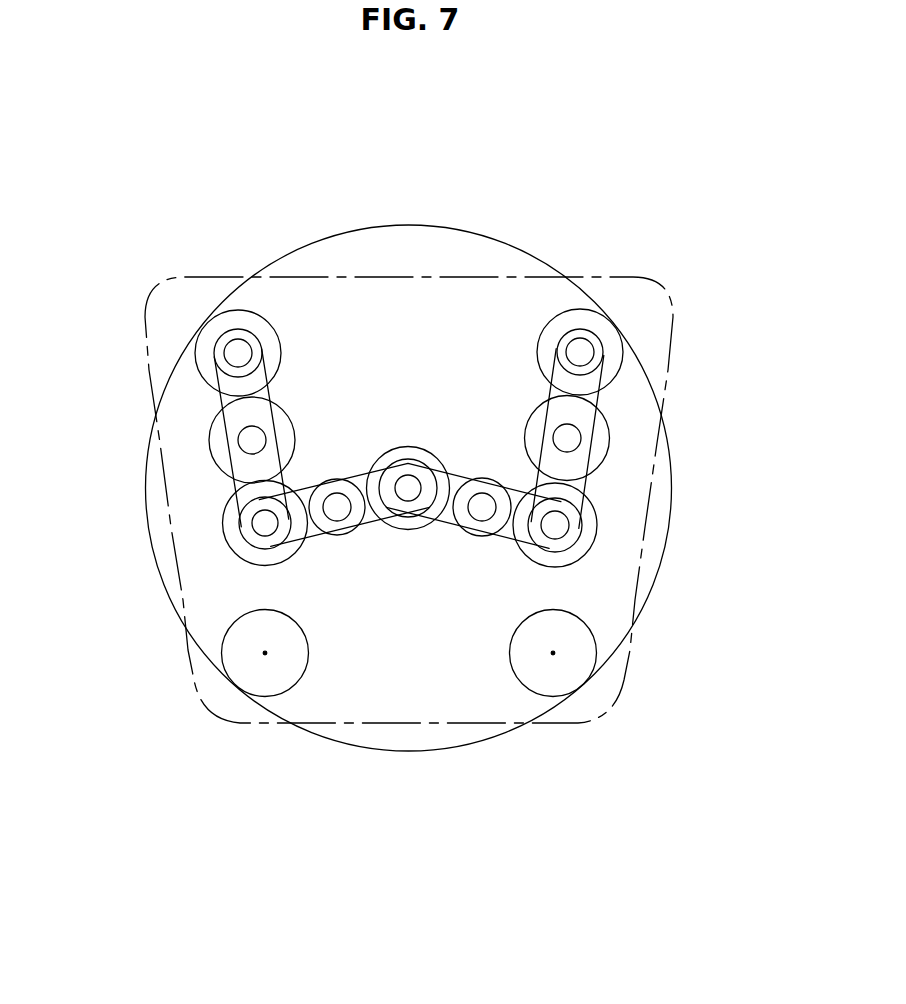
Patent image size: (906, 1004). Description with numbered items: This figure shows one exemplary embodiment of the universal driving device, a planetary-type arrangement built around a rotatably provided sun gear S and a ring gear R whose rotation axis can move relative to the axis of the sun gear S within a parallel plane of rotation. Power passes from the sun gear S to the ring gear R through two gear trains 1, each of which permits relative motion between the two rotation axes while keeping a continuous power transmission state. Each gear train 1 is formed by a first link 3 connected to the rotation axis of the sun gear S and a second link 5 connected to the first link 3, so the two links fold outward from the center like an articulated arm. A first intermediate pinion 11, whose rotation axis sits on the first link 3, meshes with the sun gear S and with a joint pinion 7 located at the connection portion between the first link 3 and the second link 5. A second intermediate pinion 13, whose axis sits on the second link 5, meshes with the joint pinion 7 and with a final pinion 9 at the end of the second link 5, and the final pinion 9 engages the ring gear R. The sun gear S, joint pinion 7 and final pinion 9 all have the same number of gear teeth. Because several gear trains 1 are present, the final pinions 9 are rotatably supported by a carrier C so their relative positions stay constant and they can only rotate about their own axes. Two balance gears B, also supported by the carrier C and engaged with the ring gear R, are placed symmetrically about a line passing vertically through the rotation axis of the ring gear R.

The gear train 1 is at (233, 558).
The first link 3 is at (449, 521).
The second link 5 is at (232, 484).
The joint pinion 7 is at (236, 538).
The final pinion 9 is at (198, 362).
The first intermediate pinion 11 is at (337, 478).
The second intermediate pinion 13 is at (218, 440).
The sun gear S is at (413, 457).
The carrier C is at (467, 277).
The ring gear R is at (543, 260).
The balance gear B is at (252, 665).